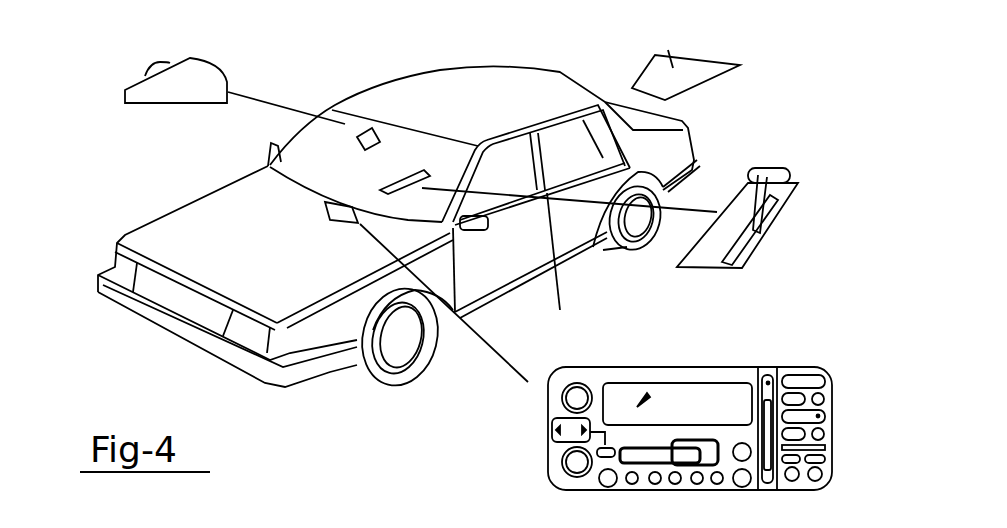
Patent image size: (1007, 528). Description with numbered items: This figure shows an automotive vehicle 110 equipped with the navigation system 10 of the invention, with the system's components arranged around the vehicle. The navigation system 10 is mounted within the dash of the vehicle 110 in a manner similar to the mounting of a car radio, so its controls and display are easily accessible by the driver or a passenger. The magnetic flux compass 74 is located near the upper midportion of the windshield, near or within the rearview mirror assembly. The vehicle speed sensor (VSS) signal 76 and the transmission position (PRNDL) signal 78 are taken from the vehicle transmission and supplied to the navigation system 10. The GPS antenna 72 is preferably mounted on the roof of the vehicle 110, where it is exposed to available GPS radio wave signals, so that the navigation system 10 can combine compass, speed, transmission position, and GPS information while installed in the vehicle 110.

The navigation system 10 is at (648, 374).
The GPS antenna 72 is at (673, 45).
The magnetic flux compass 74 is at (200, 73).
The vehicle speed sensor (VSS) signal 76 is at (795, 258).
The transmission position (PRNDL) signal 78 is at (812, 175).
The automotive vehicle 110 is at (97, 229).